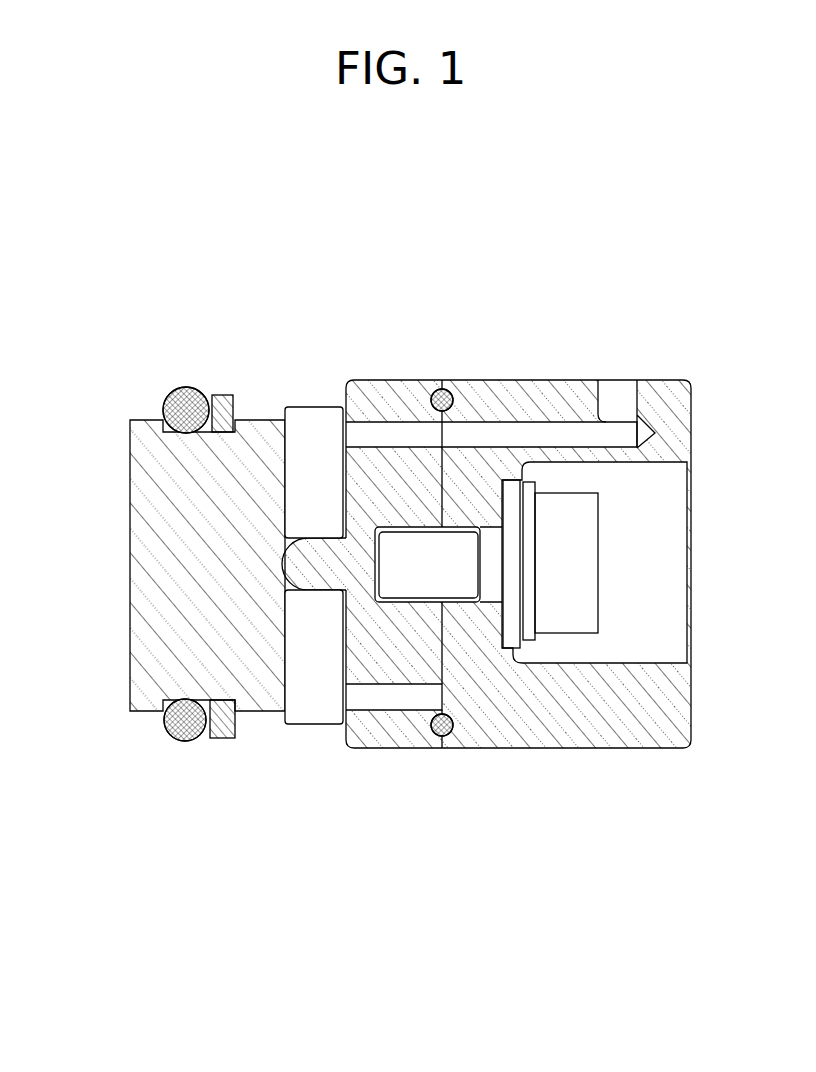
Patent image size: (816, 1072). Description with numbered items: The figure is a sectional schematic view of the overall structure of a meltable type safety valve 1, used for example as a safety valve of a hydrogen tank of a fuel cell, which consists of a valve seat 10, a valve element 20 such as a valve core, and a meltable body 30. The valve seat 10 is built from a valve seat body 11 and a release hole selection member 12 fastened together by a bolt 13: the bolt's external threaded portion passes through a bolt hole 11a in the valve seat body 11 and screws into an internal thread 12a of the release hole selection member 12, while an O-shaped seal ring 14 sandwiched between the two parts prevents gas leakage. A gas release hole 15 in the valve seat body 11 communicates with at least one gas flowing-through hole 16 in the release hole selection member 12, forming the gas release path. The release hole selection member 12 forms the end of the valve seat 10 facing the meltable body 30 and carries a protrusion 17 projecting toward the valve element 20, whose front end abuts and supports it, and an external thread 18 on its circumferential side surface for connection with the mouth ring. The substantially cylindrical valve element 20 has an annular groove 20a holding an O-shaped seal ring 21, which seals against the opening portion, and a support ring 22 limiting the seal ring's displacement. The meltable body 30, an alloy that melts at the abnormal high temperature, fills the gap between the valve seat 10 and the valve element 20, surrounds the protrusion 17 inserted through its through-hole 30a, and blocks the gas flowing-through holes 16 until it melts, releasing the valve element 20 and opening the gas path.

The meltable type safety valve 1 is at (464, 267).
The valve seat 10 is at (518, 773).
The valve seat body 11 is at (553, 379).
The bolt hole 11a is at (533, 578).
The release hole selection member 12 is at (393, 379).
The internal thread 12a is at (535, 545).
The bolt 13 is at (585, 567).
The O-shaped seal ring 14 is at (449, 390).
The gas release hole 15 is at (620, 392).
The gas flowing-through hole 16 is at (367, 425).
The protrusion 17 is at (300, 550).
The external thread 18 is at (420, 751).
The valve element 20 is at (180, 772).
The annular groove 20a is at (211, 740).
The O-shaped seal ring 21 is at (183, 385).
The support ring 22 is at (226, 395).
The meltable body 30 is at (307, 757).
The through-hole 30a is at (325, 535).